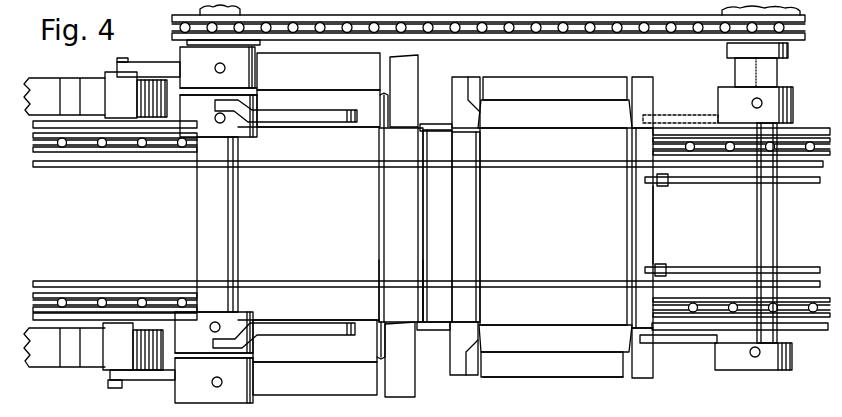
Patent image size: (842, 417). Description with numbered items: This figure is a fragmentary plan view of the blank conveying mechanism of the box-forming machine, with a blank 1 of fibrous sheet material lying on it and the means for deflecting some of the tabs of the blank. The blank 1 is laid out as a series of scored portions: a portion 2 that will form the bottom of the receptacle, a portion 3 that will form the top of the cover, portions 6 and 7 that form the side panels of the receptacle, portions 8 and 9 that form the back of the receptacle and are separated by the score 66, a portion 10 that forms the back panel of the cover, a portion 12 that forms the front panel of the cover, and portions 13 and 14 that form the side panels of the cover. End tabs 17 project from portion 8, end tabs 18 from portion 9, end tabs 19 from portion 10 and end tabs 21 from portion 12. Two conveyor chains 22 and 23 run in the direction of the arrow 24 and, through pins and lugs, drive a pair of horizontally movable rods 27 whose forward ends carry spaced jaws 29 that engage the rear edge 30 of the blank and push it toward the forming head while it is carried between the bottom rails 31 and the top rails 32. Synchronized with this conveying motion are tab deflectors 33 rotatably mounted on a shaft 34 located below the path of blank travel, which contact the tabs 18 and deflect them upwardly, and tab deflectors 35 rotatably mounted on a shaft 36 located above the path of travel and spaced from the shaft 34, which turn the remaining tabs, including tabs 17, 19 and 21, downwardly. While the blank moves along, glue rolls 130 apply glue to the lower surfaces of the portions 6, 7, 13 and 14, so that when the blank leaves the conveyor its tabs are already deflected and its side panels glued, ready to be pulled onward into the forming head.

The blank 1 is at (577, 383).
The bottom portion 2 is at (308, 223).
The cover top portion 3 is at (553, 226).
The receptacle side panel portion 6 is at (316, 224).
The receptacle side panel portion 7 is at (320, 226).
The receptacle back portion 8 is at (401, 225).
The receptacle back portion 9 is at (437, 226).
The cover back panel portion 10 is at (466, 227).
The cover front panel portion 12 is at (642, 228).
The cover side panel portion 13 is at (554, 227).
The cover side panel portion 14 is at (555, 226).
The end tabs 17 is at (401, 226).
The end tabs 18 is at (437, 126).
The end tabs 19 is at (462, 88).
The end tabs 21 is at (633, 387).
The conveyor chain 22 is at (806, 253).
The conveyor chain 23 is at (823, 148).
The arrow 24 is at (55, 216).
The horizontally movable rods 27 is at (718, 183).
The jaws 29 is at (661, 186).
The rear edge 30 is at (655, 236).
The bottom rails 31 is at (797, 132).
The top rails 32 is at (608, 168).
The tab deflectors 33 is at (674, 119).
The shaft 34 is at (760, 233).
The tab deflectors 35 is at (107, 96).
The shaft 36 is at (221, 227).
The score 66 is at (420, 267).
The glue rolls 130 is at (42, 88).